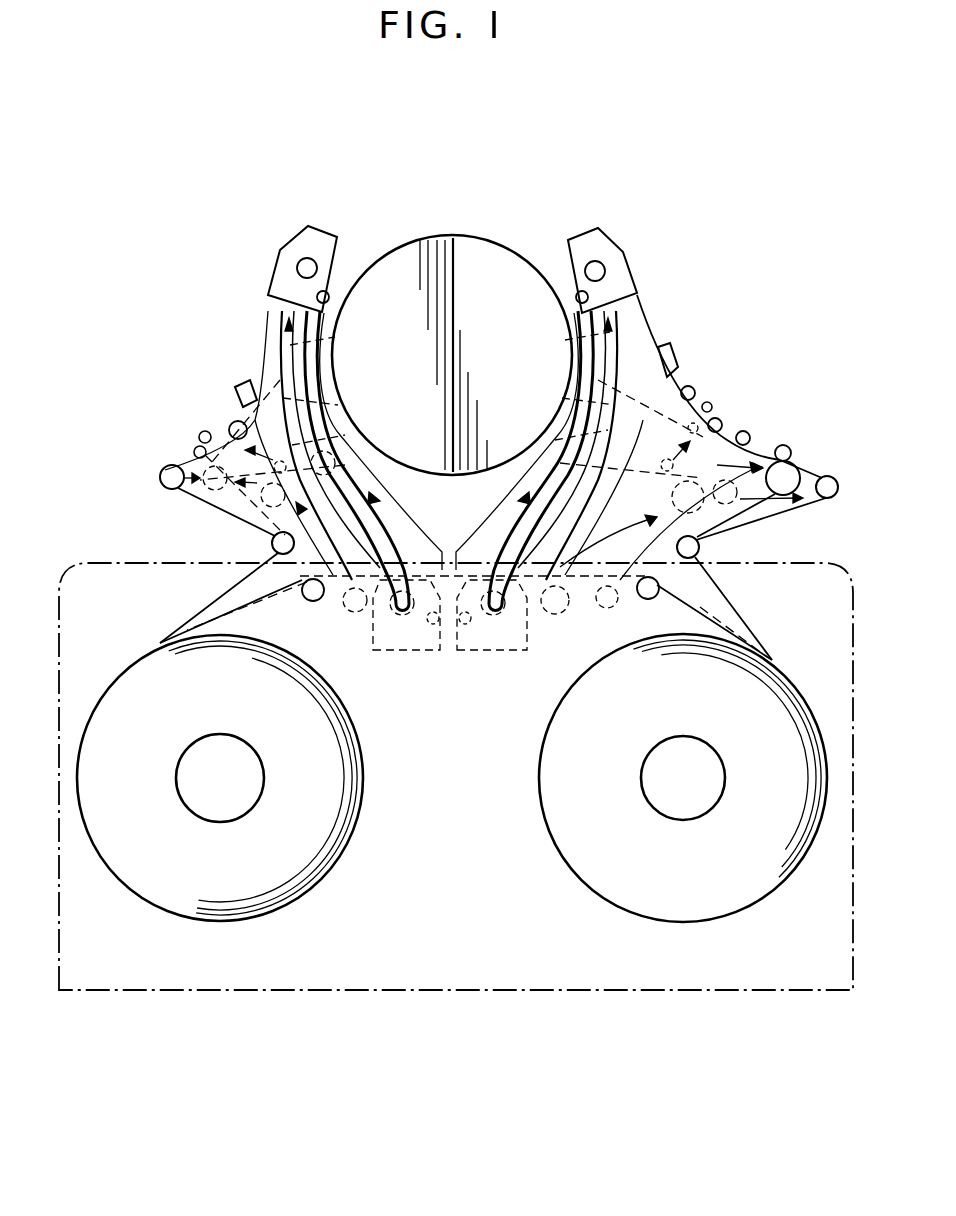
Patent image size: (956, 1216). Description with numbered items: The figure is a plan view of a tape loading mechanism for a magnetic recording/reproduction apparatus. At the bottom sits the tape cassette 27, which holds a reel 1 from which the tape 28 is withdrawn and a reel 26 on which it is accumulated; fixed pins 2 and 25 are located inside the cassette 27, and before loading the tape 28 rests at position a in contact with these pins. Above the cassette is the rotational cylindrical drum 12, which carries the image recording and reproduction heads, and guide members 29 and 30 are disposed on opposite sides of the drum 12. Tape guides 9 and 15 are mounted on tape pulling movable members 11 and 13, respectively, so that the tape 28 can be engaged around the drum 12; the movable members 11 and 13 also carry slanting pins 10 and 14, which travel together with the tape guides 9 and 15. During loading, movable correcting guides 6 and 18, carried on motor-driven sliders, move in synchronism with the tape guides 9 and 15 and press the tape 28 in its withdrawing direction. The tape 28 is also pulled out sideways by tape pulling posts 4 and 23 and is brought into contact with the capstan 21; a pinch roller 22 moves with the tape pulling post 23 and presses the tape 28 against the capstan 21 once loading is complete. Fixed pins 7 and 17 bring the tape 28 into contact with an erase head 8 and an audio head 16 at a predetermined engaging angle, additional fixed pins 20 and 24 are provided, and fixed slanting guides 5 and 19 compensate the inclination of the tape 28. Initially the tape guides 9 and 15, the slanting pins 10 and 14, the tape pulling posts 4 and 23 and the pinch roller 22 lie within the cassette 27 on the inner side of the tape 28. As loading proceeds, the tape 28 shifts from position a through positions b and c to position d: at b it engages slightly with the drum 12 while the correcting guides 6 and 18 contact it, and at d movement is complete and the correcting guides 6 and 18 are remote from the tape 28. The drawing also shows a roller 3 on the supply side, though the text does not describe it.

The reel 1 is at (172, 913).
The fixed pin 2 is at (312, 601).
The guide roller 3 is at (271, 543).
The tape pulling post 4 is at (158, 479).
The fixed slanting guide 5 is at (194, 452).
The movable correcting guide 6 is at (199, 432).
The fixed pin 7 is at (230, 425).
The erase head 8 is at (240, 385).
The tape guide 9 is at (305, 260).
The slanting pin 10 is at (328, 291).
The tape pulling movable member 11 is at (325, 232).
The rotational cylindrical drum 12 is at (453, 238).
The tape pulling movable member 13 is at (592, 228).
The slanting pin 14 is at (575, 291).
The tape guide 15 is at (603, 264).
The audio head 16 is at (668, 350).
The fixed pin 17 is at (690, 386).
The movable correcting guide 18 is at (708, 402).
The fixed slanting guide 19 is at (720, 419).
The fixed pin 20 is at (748, 432).
The capstan 21 is at (786, 445).
The pinch roller 22 is at (796, 470).
The tape pulling post 23 is at (829, 499).
The fixed pin 24 is at (700, 547).
The fixed pin 25 is at (640, 598).
The reel 26 is at (762, 900).
The tape cassette 27 is at (481, 990).
The tape 28 is at (228, 603).
The guide member 29 is at (270, 307).
The guide member 30 is at (640, 338).